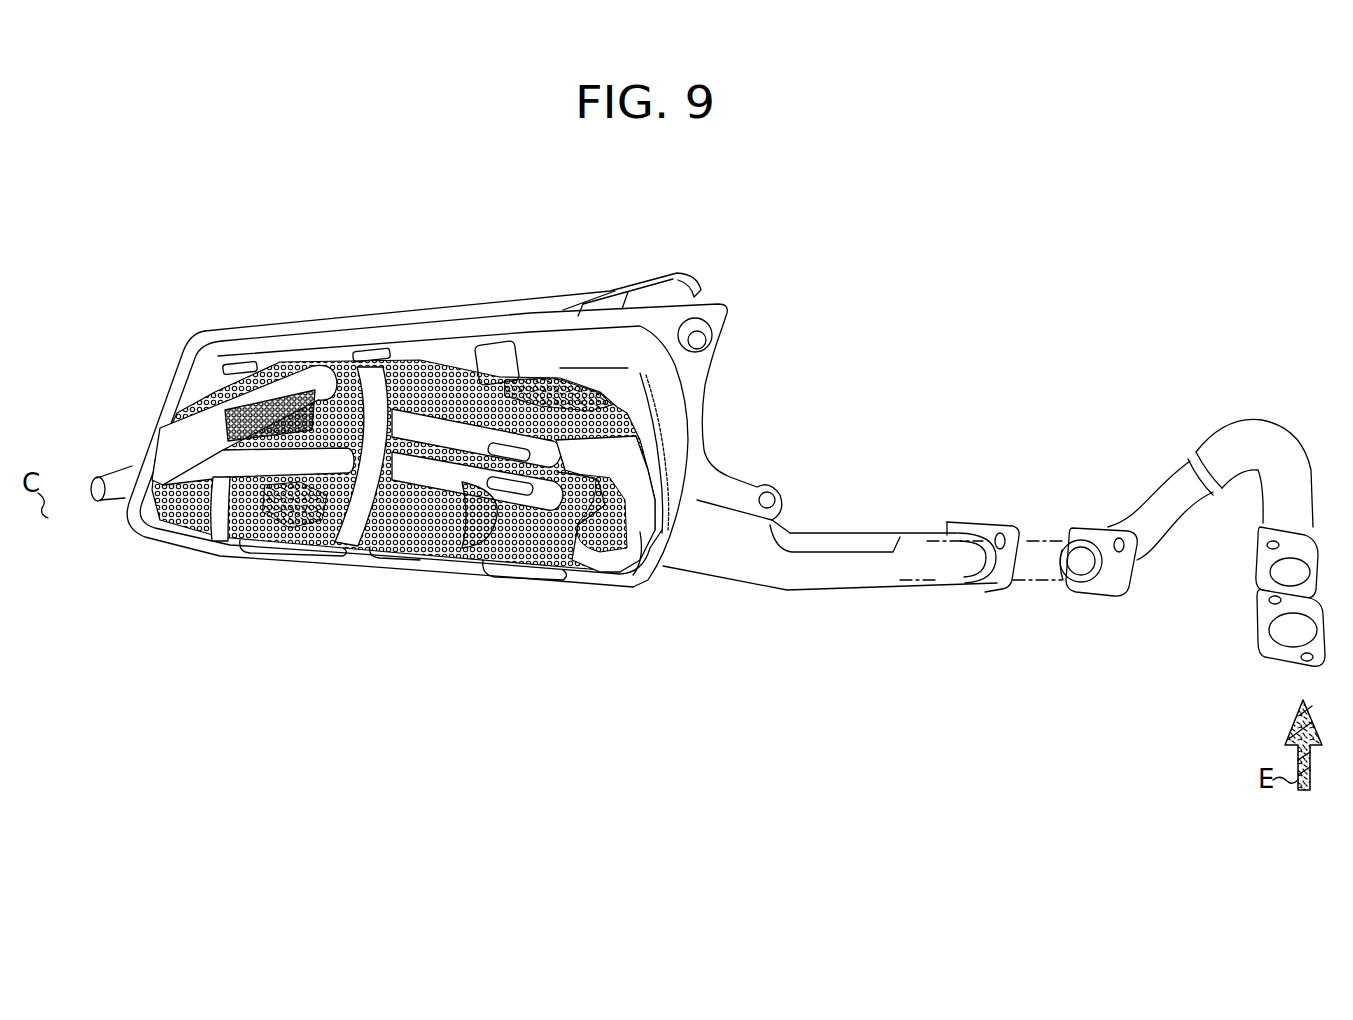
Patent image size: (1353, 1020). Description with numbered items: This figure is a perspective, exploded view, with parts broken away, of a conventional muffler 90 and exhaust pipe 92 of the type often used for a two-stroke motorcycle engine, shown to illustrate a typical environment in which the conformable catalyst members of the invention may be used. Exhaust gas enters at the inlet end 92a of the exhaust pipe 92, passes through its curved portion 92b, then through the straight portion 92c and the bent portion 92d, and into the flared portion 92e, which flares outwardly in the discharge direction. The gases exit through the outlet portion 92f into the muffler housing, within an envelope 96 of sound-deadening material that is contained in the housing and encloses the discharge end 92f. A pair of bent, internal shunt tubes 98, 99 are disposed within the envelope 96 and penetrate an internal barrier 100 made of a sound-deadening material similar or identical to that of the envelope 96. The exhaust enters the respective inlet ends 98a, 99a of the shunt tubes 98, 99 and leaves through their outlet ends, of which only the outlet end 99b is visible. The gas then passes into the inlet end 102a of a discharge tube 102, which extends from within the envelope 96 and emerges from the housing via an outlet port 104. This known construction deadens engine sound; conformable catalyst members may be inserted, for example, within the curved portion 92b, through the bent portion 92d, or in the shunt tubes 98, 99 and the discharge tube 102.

The muffler 90 is at (174, 325).
The exhaust pipe 92 is at (994, 518).
The inlet end 92a is at (1290, 568).
The curved portion 92b is at (1270, 435).
The straight portion 92c is at (900, 572).
The bent portion 92d is at (792, 590).
The flared portion 92e is at (633, 547).
The outlet portion 92f is at (463, 500).
The envelope 96 is at (640, 410).
The shunt tube 98 is at (443, 417).
The inlet end 98a is at (643, 437).
The shunt tube 99 is at (437, 463).
The inlet end 99a is at (547, 485).
The outlet end 99b is at (230, 470).
The internal barrier 100 is at (340, 363).
The discharge tube 102 is at (185, 433).
The inlet end 102a is at (308, 377).
The outlet port 104 is at (112, 478).